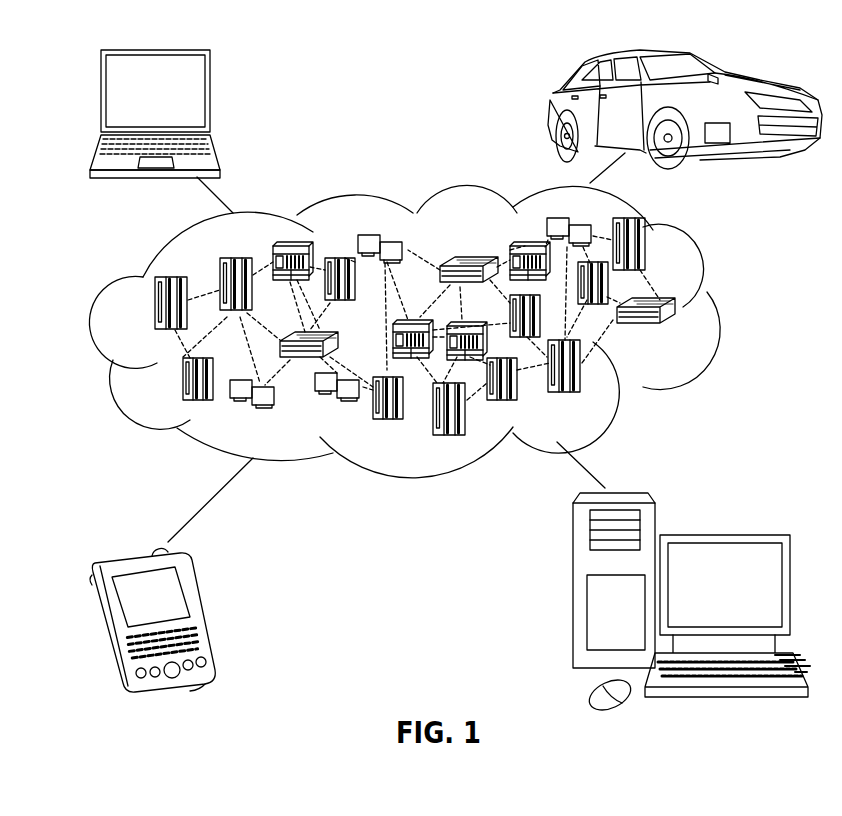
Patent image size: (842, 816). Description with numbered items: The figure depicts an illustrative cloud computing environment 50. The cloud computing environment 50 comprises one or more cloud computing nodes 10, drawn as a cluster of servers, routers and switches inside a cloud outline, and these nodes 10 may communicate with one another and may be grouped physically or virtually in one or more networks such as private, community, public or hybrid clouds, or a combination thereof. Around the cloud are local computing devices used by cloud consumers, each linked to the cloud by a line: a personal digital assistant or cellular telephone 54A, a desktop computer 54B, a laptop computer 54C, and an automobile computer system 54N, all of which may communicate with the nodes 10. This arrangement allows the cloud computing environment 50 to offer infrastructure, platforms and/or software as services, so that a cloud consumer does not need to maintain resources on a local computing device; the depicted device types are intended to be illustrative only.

The cloud computing node 10 is at (684, 336).
The cloud computing environment 50 is at (725, 312).
The personal digital assistant or cellular telephone 54A is at (198, 608).
The desktop computer 54B is at (722, 535).
The laptop computer 54C is at (210, 97).
The automobile computer system 54N is at (548, 114).